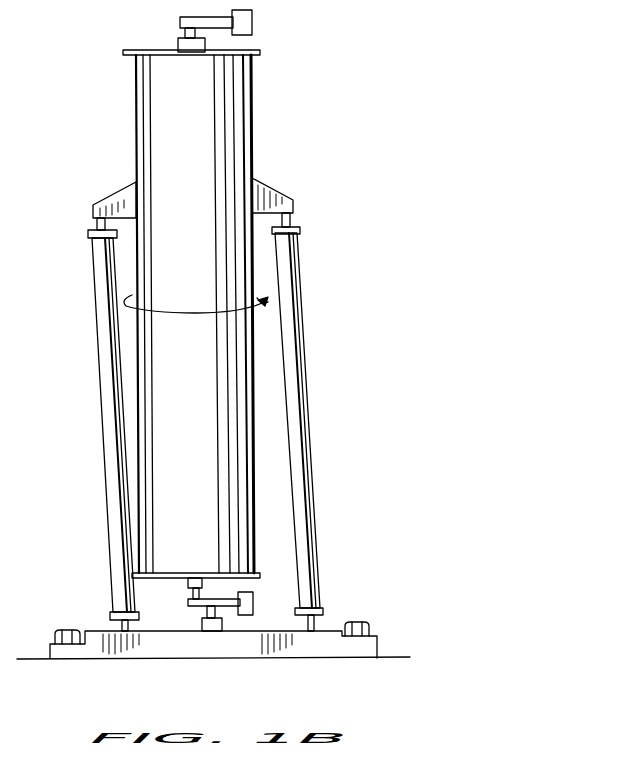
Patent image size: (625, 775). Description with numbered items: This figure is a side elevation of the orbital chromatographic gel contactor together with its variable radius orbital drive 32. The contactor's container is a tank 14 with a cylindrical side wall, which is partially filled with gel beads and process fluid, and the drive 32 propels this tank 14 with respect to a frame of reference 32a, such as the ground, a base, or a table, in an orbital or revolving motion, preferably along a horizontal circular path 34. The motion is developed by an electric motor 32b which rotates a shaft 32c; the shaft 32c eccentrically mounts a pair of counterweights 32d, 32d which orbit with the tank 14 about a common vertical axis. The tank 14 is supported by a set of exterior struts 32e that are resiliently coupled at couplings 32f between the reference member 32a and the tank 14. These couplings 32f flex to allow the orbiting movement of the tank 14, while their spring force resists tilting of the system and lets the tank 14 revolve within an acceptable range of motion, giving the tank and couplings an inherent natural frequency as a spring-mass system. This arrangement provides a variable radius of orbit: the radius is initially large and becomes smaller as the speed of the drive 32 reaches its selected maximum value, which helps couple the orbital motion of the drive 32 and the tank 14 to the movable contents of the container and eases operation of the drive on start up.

The tank 14 is at (265, 156).
The orbital drive 32 is at (326, 357).
The frame of reference 32a is at (157, 650).
The electric motor 32b is at (180, 587).
The shaft 32c is at (212, 598).
The counterweights 32d is at (252, 22).
The exterior struts 32e is at (102, 383).
The resilient couplings 32f is at (82, 224).
The horizontal circular path 34 is at (210, 313).